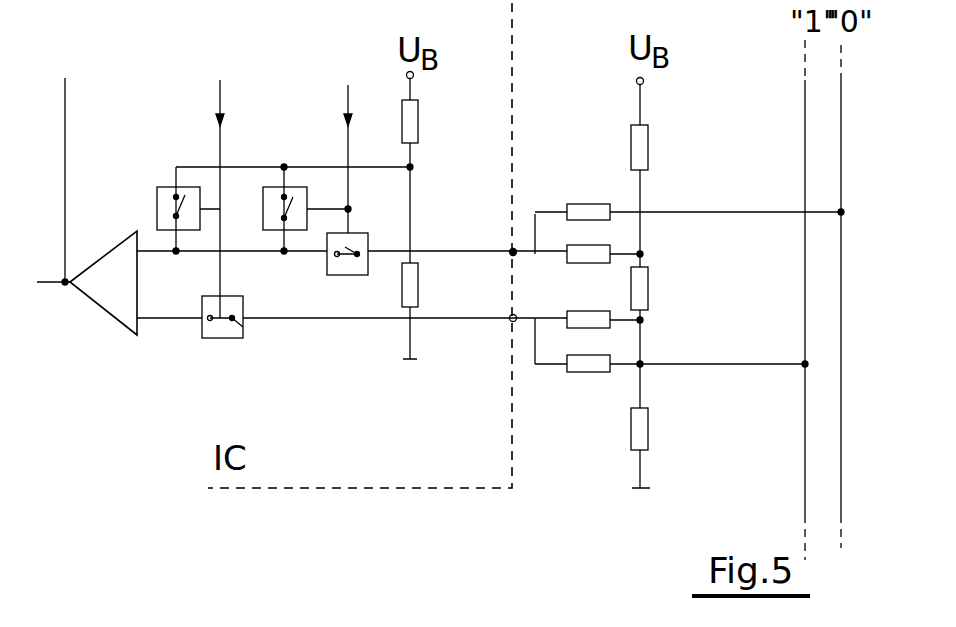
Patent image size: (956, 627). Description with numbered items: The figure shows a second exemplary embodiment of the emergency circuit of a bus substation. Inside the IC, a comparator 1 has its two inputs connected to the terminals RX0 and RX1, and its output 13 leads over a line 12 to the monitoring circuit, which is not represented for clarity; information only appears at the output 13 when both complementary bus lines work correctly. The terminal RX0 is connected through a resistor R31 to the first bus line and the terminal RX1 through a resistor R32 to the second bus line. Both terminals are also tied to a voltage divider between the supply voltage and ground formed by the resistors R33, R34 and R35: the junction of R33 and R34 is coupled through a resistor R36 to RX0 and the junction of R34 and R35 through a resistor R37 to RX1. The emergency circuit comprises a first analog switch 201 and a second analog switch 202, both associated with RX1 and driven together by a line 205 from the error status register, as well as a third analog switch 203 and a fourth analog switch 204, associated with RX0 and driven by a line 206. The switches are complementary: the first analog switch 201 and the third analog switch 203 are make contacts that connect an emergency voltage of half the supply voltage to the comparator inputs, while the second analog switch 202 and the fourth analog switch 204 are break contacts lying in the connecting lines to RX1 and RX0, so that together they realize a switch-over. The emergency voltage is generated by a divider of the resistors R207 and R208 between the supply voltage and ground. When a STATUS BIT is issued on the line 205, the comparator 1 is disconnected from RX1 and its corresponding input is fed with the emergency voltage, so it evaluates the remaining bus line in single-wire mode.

The comparator 1 is at (128, 322).
The line 12 is at (67, 93).
The output 13 is at (40, 284).
The first analog switch 201 is at (160, 200).
The second analog switch 202 is at (243, 335).
The third analog switch 203 is at (262, 198).
The fourth analog switch 204 is at (328, 268).
The line 205 is at (220, 92).
The line 206 is at (348, 90).
The resistor R207 is at (418, 120).
The resistor R208 is at (418, 283).
The terminal RX0 is at (513, 251).
The terminal RX1 is at (513, 320).
The resistor R31 is at (598, 205).
The resistor R32 is at (597, 373).
The resistor R33 is at (660, 148).
The resistor R34 is at (648, 296).
The resistor R35 is at (648, 436).
The resistor R36 is at (597, 254).
The resistor R37 is at (600, 322).